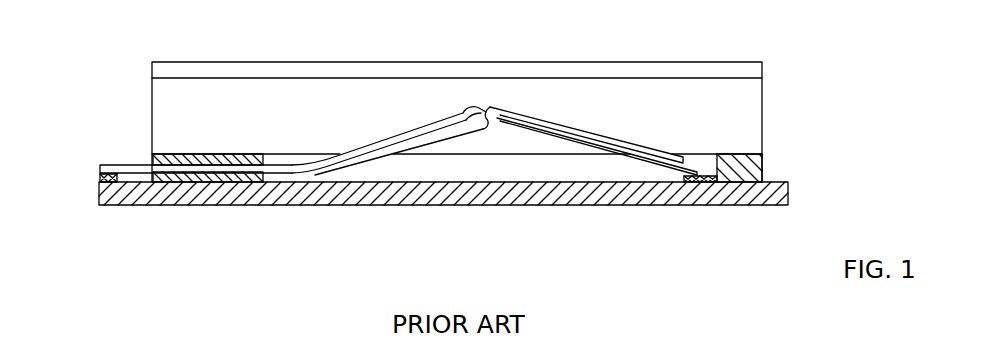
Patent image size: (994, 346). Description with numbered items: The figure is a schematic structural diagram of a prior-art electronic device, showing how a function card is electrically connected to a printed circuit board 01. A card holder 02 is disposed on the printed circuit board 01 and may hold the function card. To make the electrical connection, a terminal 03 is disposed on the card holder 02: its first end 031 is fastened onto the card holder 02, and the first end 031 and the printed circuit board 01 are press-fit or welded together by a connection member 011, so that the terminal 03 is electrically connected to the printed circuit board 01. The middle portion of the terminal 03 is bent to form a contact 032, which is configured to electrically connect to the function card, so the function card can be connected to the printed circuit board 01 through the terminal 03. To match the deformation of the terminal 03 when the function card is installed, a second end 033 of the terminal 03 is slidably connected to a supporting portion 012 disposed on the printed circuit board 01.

The printed circuit board 01 is at (129, 196).
The connection member 011 is at (102, 178).
The supporting portion 012 is at (702, 182).
The card holder 02 is at (176, 120).
The terminal 03 is at (494, 146).
The first end 031 is at (128, 168).
The contact 032 is at (487, 116).
The second end 033 is at (665, 168).